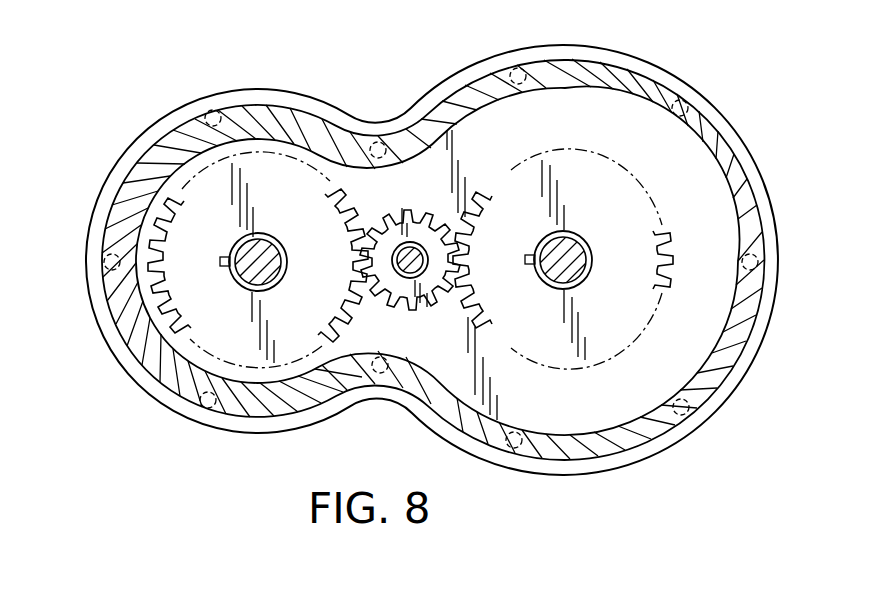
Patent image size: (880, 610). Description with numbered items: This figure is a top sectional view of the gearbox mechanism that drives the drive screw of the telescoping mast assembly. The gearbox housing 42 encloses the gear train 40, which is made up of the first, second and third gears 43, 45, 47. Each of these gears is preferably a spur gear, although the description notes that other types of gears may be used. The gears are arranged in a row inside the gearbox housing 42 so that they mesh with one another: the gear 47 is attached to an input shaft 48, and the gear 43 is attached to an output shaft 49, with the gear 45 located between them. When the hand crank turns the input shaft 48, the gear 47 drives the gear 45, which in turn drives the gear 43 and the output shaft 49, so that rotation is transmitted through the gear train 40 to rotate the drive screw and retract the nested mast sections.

The gear train 40 is at (360, 190).
The gearbox housing 42 is at (188, 386).
The first gear 43 is at (476, 198).
The second gear 45 is at (406, 228).
The third gear 47 is at (146, 214).
The input shaft 48 is at (265, 245).
The output shaft 49 is at (568, 243).